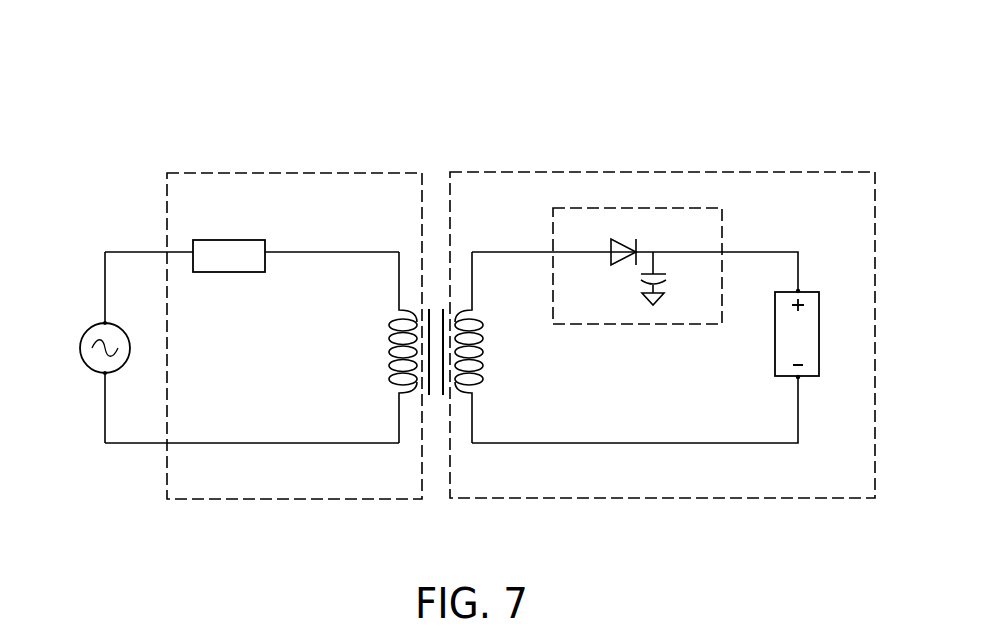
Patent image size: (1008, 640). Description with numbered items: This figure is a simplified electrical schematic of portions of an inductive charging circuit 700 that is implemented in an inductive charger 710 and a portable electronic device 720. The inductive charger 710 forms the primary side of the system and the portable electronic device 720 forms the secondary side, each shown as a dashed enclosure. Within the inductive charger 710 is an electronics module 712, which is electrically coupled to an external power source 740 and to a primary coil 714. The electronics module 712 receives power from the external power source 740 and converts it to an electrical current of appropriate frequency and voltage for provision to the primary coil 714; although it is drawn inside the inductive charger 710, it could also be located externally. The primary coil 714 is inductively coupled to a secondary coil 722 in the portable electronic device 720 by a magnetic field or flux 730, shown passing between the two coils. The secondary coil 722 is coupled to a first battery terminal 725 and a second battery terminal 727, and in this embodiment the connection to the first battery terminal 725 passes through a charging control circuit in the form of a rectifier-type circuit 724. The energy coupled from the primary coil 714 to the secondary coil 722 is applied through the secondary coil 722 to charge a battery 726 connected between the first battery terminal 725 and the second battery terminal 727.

The inductive charging circuit 700 is at (288, 97).
The inductive charger 710 is at (222, 197).
The electronics module 712 is at (235, 272).
The primary coil 714 is at (388, 366).
The portable electronic device 720 is at (826, 193).
The secondary coil 722 is at (483, 366).
The rectifier-type circuit 724 is at (553, 229).
The first battery terminal 725 is at (798, 290).
The battery 726 is at (775, 337).
The second battery terminal 727 is at (798, 378).
The magnetic field or flux 730 is at (437, 403).
The external power source 740 is at (84, 338).